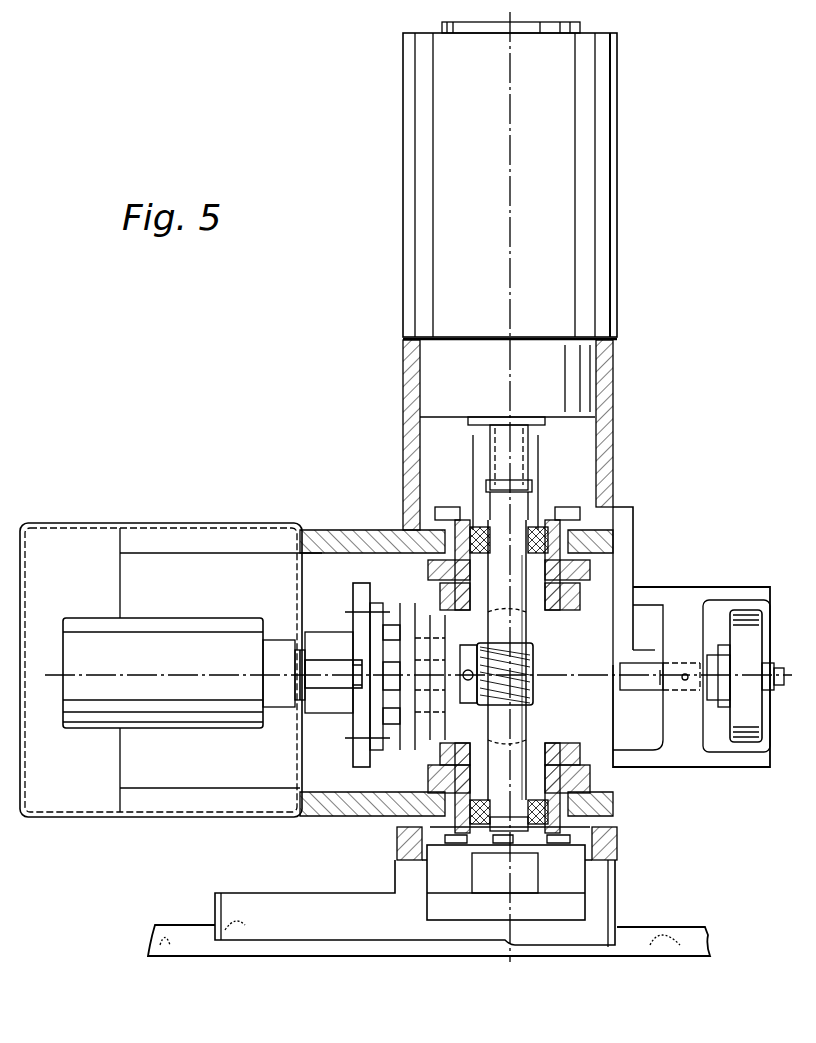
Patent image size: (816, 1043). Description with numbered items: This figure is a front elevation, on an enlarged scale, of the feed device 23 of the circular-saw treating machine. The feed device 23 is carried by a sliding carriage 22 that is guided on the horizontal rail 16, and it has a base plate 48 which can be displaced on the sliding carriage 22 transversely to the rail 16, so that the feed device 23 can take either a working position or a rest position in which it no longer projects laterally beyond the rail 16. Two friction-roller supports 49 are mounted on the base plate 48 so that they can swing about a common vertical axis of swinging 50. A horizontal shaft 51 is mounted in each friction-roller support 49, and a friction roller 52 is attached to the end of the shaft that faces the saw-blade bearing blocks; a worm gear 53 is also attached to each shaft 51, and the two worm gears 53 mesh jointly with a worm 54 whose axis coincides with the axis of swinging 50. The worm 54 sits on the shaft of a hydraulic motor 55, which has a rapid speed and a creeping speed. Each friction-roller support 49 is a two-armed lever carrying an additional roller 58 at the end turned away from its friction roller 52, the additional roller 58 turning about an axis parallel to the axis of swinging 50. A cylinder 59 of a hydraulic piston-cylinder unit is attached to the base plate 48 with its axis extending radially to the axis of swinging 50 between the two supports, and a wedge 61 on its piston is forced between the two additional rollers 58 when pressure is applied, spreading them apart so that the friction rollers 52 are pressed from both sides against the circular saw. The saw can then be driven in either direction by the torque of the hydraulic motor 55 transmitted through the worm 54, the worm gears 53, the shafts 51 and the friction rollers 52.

The horizontal rail 16 is at (670, 942).
The sliding carriage 22 is at (328, 908).
The feed device 23 is at (352, 374).
The base plate 48 is at (600, 804).
The friction-roller support 49 is at (683, 752).
The axis of swinging 50 is at (511, 246).
The horizontal shaft 51 is at (606, 688).
The friction roller 52 is at (745, 742).
The worm gear 53 is at (527, 726).
The worm 54 is at (534, 652).
The hydraulic motor 55 is at (422, 218).
The additional roller 58 is at (321, 690).
The cylinder 59 is at (190, 714).
The wedge 61 is at (306, 650).